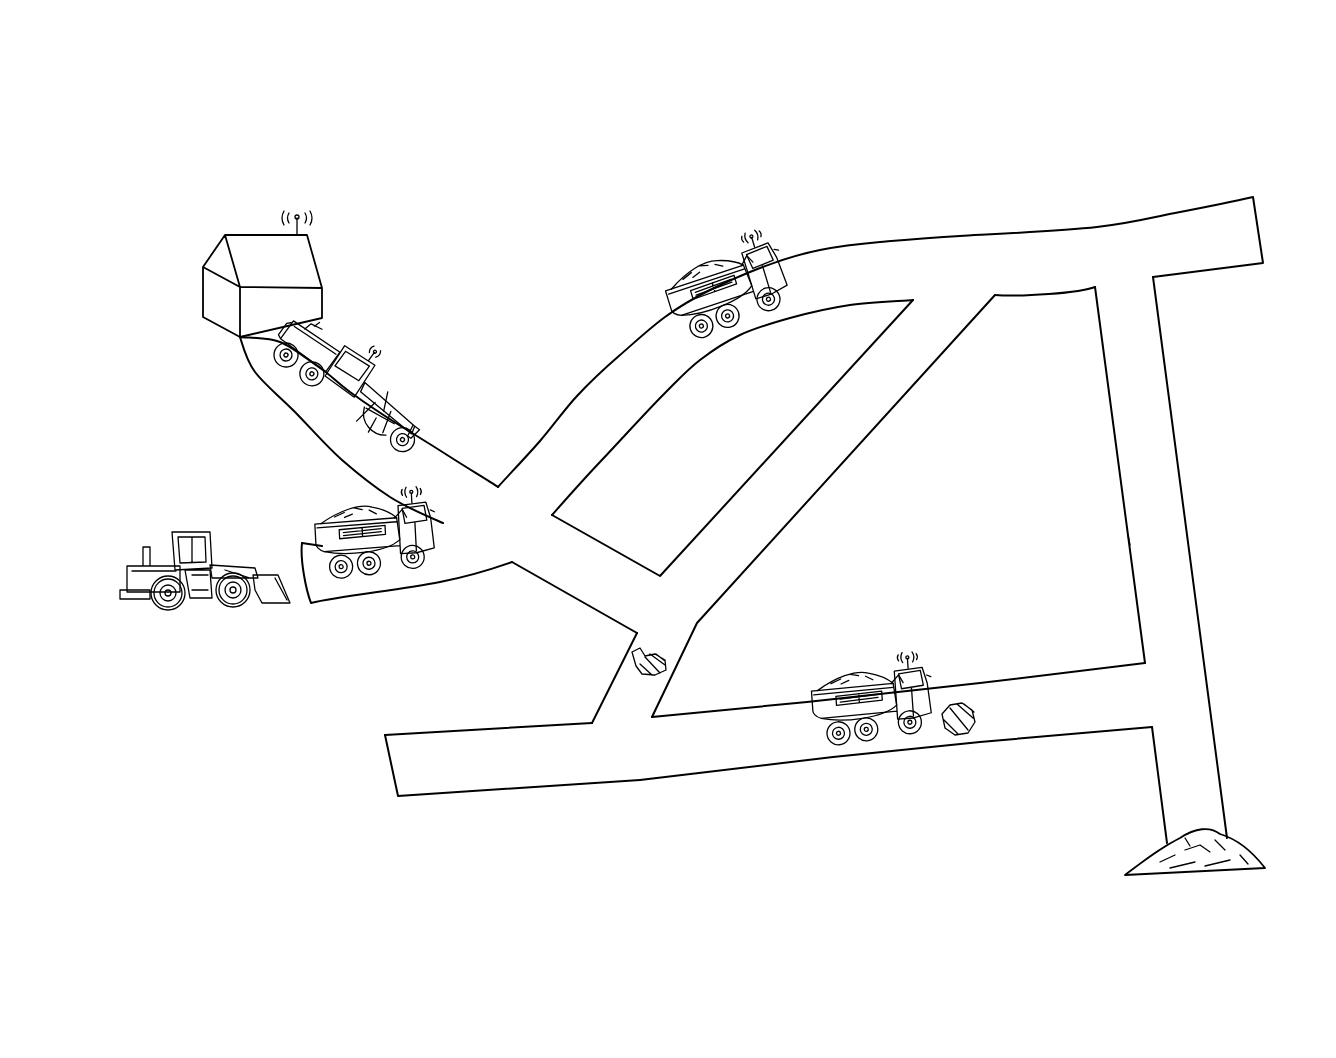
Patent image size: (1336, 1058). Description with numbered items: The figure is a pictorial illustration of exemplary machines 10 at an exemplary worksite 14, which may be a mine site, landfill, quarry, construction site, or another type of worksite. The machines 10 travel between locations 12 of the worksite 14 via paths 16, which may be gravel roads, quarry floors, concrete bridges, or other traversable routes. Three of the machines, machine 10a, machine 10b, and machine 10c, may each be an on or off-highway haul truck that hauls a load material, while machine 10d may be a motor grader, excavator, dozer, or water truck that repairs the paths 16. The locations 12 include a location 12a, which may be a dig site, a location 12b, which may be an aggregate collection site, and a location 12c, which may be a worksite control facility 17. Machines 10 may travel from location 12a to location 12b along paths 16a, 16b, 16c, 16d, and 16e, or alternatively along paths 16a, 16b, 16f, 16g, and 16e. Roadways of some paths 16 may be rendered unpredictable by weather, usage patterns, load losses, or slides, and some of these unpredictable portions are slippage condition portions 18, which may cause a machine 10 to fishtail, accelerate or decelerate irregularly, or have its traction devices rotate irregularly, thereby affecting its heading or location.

The machines 10 is at (533, 463).
The machine 10a is at (328, 522).
The machine 10b is at (740, 257).
The machine 10c is at (858, 675).
The machine 10d is at (343, 337).
The locations 12 is at (718, 519).
The location 12a is at (307, 572).
The location 12b is at (1243, 860).
The location 12c is at (317, 265).
The worksite 14 is at (1052, 158).
The paths 16 is at (292, 408).
The path 16a is at (448, 560).
The path 16b is at (578, 575).
The path 16c is at (624, 680).
The path 16d is at (992, 688).
The path 16e is at (1170, 775).
The path 16f is at (909, 388).
The path 16g is at (1133, 532).
The worksite control facility 17 is at (297, 223).
The slippage condition portions 18 is at (667, 662).